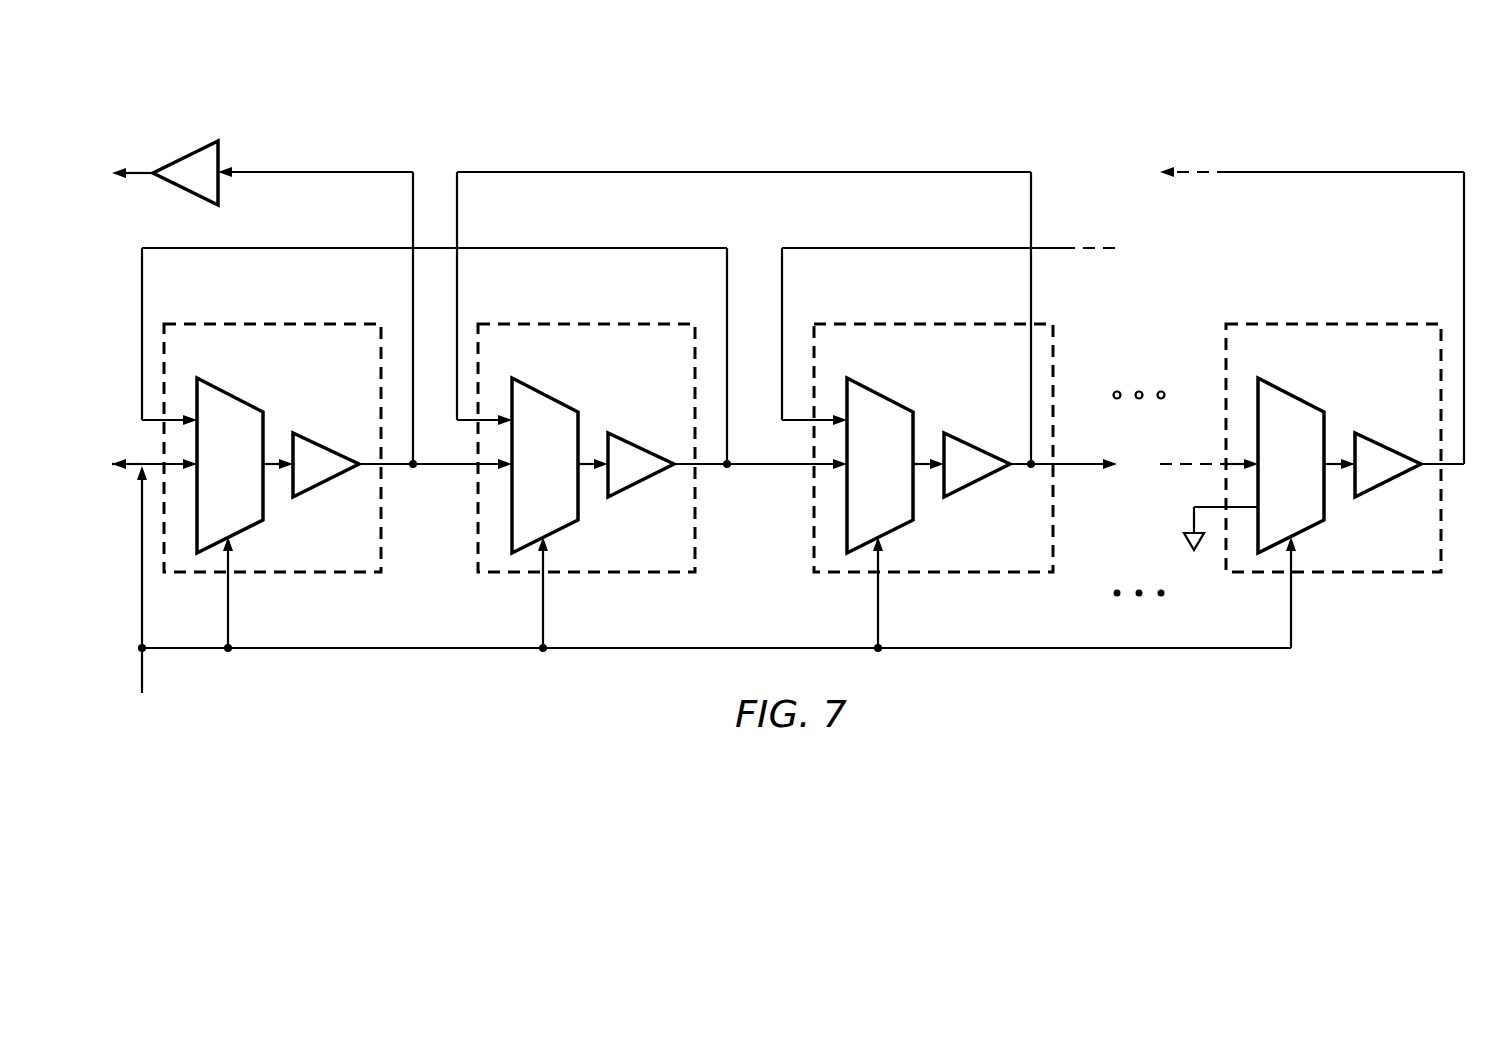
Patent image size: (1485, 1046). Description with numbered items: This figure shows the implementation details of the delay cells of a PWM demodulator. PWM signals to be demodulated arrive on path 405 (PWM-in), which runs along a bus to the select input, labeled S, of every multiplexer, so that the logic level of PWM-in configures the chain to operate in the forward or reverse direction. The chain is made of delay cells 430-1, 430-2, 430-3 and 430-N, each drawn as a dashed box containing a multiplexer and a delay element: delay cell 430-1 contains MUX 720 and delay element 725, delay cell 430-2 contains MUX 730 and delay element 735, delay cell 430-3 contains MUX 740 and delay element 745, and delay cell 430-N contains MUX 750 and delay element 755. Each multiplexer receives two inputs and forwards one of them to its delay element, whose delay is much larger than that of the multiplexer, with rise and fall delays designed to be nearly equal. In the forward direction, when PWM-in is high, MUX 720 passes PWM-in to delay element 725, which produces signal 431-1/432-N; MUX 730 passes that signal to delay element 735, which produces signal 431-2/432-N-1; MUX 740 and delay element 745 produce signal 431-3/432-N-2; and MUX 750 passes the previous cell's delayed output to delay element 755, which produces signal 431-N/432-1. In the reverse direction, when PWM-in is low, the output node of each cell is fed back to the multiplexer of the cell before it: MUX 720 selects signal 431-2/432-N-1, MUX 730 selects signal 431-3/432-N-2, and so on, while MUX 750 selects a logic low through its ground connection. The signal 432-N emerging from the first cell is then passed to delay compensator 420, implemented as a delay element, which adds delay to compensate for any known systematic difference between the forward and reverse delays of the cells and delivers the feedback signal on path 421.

The path (PWM-in) 405 is at (142, 668).
The delay compensator 420 is at (185, 153).
The feedback signal (FB) 421 is at (142, 176).
The delay cell 430-1 is at (264, 312).
The delay cell 430-2 is at (584, 312).
The delay cell 430-3 is at (944, 312).
The delay cell 430-N is at (1335, 312).
The multiplexer (MUX) 720 is at (228, 394).
The delay element 725 is at (327, 446).
The multiplexer (MUX) 730 is at (543, 394).
The delay element 735 is at (642, 446).
The multiplexer (MUX) 740 is at (878, 394).
The delay element 745 is at (977, 446).
The multiplexer (MUX) 750 is at (1289, 394).
The delay element 755 is at (1388, 446).
The signal 431-1 is at (435, 506).
The signal 432-N is at (440, 468).
The signal 431-2 is at (760, 506).
The signal 432-N-1 is at (765, 468).
The signal 431-3 is at (1134, 506).
The signal 432-N-2 is at (1087, 468).
The signal 431-N is at (1312, 277).
The signal 432-1 is at (1300, 170).